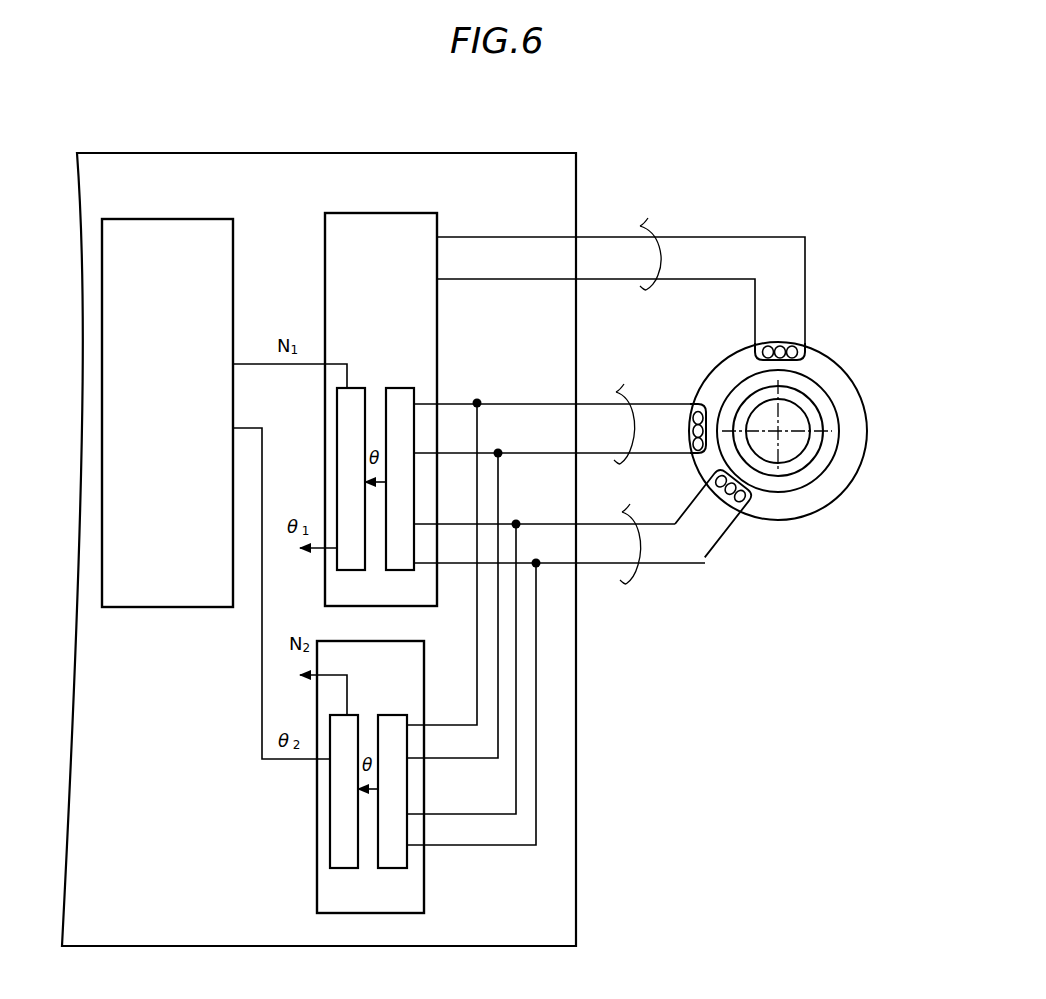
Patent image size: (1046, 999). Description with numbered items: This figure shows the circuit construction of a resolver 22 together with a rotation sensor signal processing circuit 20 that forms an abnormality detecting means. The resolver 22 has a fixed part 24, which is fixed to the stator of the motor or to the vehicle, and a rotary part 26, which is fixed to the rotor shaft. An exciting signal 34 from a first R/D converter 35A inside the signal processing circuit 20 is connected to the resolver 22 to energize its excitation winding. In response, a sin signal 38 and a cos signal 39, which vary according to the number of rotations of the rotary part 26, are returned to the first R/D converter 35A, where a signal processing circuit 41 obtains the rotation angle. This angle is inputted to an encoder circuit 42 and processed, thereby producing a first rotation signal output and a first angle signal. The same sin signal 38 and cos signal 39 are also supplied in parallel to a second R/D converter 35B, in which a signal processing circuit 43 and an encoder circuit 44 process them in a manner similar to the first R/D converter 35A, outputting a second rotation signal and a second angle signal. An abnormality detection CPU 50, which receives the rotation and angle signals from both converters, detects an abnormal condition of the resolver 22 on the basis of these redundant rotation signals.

The rotation sensor signal processing circuit 20 is at (164, 160).
The abnormality detection CPU 50 is at (214, 219).
The first R/D converter 35A is at (393, 220).
The encoder circuit 42 is at (348, 391).
The signal processing circuit 41 is at (395, 391).
The second R/D converter 35B is at (322, 868).
The encoder circuit 44 is at (346, 716).
The signal processing circuit 43 is at (394, 716).
The resolver 22 is at (807, 429).
The fixed part 24 is at (867, 435).
The rotary part 26 is at (793, 466).
The exciting signal 34 is at (654, 219).
The sin signal 38 is at (620, 388).
The cos signal 39 is at (632, 595).